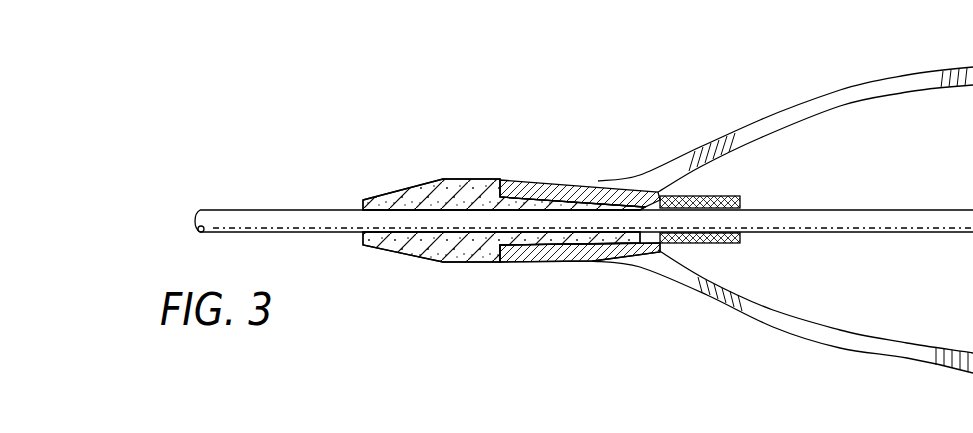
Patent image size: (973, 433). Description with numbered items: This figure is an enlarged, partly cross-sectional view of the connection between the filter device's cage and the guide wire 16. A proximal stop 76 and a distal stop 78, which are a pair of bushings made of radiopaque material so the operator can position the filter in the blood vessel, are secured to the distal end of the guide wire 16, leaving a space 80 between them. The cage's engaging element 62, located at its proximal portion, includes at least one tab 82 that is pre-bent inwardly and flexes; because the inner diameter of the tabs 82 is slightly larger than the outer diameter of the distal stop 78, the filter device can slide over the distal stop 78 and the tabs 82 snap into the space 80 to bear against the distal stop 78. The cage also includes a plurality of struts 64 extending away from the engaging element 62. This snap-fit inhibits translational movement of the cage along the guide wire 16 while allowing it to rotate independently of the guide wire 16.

The guide wire 16 is at (233, 218).
The proximal stop 76 is at (402, 188).
The tab 82 is at (522, 177).
The engaging element 62 is at (608, 180).
The distal stop 78 is at (698, 195).
The struts 64 is at (863, 97).
The space 80 is at (603, 240).